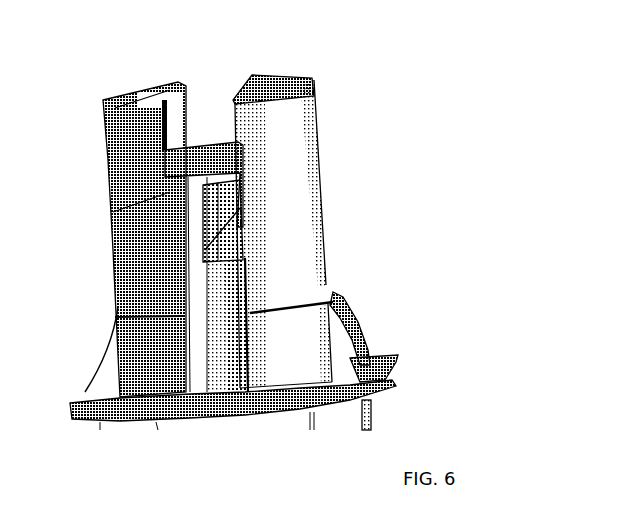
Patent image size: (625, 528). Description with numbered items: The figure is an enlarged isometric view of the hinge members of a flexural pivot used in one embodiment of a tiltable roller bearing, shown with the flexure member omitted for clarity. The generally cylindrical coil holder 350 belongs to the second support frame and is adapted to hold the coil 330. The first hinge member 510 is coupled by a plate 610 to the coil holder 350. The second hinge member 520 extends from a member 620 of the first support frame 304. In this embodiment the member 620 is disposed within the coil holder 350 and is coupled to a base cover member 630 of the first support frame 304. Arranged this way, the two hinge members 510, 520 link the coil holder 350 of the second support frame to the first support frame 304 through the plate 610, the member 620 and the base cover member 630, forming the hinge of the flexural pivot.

The first support frame 304 is at (250, 258).
The coil 330 is at (350, 412).
The coil holder 350 is at (313, 112).
The first hinge member 510 is at (113, 212).
The second hinge member 520 is at (193, 243).
The plate 610 is at (206, 141).
The member 620 is at (285, 347).
The base cover member 630 is at (377, 357).